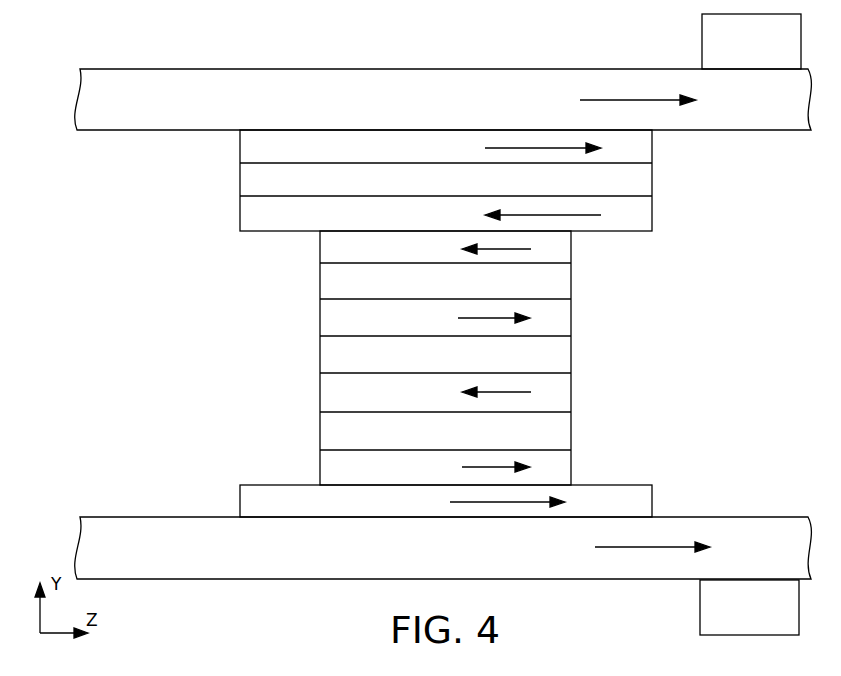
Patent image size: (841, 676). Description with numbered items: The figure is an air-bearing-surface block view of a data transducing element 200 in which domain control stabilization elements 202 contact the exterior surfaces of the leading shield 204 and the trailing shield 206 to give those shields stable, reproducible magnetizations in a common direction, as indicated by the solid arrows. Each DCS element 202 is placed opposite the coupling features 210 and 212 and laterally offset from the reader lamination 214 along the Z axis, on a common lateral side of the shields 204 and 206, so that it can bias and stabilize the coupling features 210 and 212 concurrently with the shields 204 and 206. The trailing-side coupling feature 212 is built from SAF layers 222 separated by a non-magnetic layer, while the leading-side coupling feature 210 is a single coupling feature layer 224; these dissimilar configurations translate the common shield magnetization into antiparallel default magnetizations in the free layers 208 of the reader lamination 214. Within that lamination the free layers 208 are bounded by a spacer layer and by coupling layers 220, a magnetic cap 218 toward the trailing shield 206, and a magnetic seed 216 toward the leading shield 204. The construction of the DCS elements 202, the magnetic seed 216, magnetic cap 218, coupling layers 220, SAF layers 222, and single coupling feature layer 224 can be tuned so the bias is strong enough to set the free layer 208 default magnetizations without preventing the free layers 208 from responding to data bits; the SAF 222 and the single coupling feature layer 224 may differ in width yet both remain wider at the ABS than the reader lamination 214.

The data transducing element 200 is at (102, 25).
The domain control stabilization (DCS) element 202 is at (688, 32).
The leading shield 204 is at (121, 557).
The trailing shield 206 is at (121, 109).
The free layer 208 is at (571, 316).
The coupling feature 210 is at (473, 471).
The coupling feature 212 is at (456, 209).
The reader lamination 214 is at (433, 358).
The magnetic seed 216 is at (571, 474).
The magnetic cap 218 is at (571, 251).
The coupling layer 220 is at (571, 283).
The SAF layer 222 is at (652, 147).
The single coupling feature layer 224 is at (652, 500).